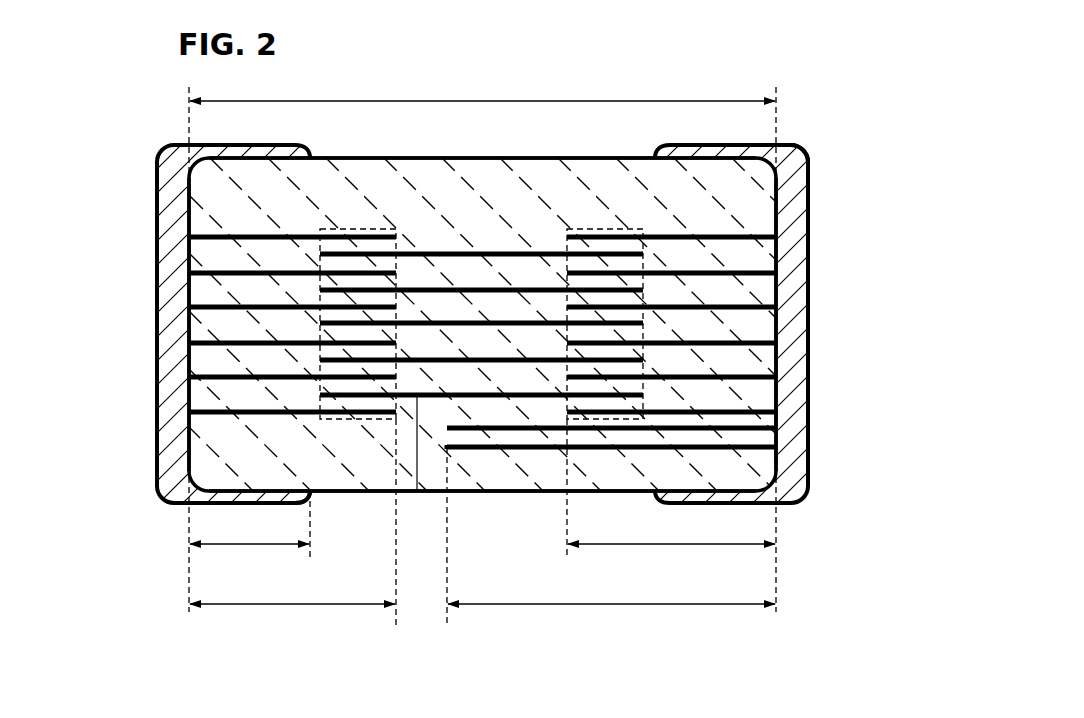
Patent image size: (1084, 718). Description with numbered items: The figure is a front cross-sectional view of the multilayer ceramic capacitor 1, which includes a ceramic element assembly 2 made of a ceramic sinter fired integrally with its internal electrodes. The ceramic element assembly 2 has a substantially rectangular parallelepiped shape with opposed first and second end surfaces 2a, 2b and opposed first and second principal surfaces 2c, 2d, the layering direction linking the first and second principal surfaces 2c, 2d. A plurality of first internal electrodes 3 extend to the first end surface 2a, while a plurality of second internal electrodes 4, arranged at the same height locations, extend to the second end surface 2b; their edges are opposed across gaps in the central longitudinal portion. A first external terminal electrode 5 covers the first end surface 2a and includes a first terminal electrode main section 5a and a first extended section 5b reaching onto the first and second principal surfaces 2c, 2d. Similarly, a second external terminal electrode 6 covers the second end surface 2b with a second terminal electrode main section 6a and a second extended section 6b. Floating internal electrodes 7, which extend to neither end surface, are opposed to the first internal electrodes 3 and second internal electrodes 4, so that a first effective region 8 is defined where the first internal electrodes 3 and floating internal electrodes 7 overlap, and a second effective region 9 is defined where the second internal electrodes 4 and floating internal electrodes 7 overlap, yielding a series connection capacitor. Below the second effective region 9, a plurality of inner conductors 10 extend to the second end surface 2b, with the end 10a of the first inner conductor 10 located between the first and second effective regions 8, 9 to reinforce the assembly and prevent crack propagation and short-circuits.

The multilayer ceramic capacitor 1 is at (147, 116).
The ceramic element assembly 2 is at (405, 155).
The first end surface 2a is at (778, 214).
The second end surface 2b is at (190, 212).
The first principal surface 2c is at (512, 157).
The second principal surface 2d is at (330, 490).
The first internal electrode 3 is at (774, 260).
The second internal electrode 4 is at (203, 372).
The first external terminal electrode 5 is at (925, 115).
The first terminal electrode main section 5a is at (808, 200).
The first extended section 5b is at (730, 145).
The second external terminal electrode 6 is at (78, 463).
The second terminal electrode main section 6a is at (158, 457).
The second extended section 6b is at (215, 503).
The floating internal electrode 7 is at (460, 248).
The first effective region 8 is at (600, 226).
The second effective region 9 is at (353, 226).
The inner conductor 10 is at (736, 423).
The end of the first inner conductor 10a is at (447, 448).